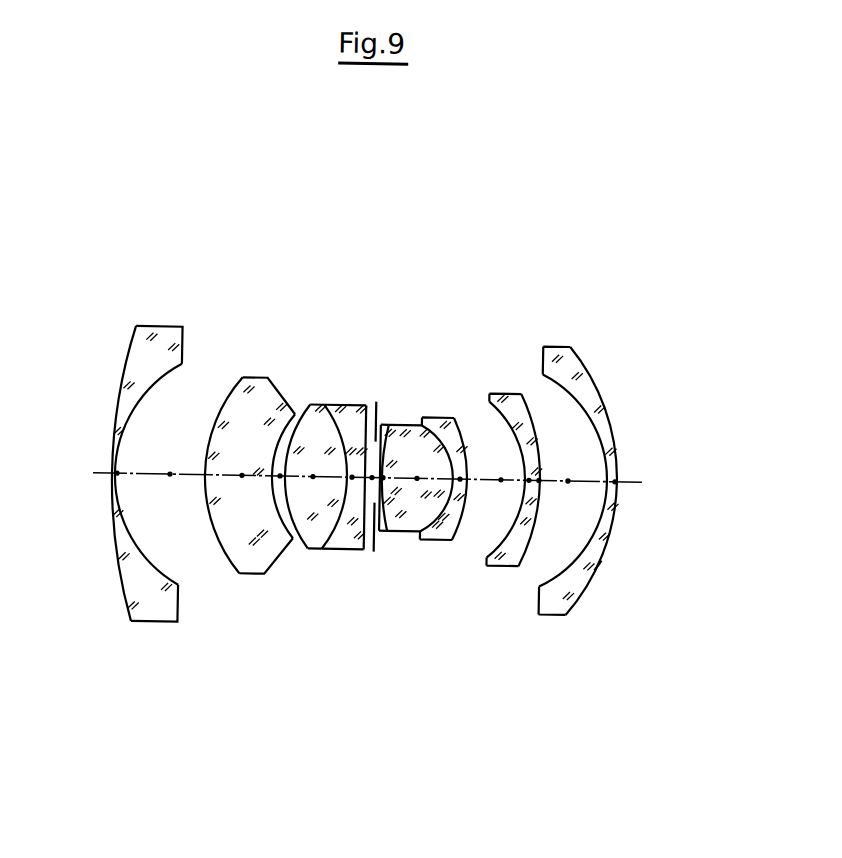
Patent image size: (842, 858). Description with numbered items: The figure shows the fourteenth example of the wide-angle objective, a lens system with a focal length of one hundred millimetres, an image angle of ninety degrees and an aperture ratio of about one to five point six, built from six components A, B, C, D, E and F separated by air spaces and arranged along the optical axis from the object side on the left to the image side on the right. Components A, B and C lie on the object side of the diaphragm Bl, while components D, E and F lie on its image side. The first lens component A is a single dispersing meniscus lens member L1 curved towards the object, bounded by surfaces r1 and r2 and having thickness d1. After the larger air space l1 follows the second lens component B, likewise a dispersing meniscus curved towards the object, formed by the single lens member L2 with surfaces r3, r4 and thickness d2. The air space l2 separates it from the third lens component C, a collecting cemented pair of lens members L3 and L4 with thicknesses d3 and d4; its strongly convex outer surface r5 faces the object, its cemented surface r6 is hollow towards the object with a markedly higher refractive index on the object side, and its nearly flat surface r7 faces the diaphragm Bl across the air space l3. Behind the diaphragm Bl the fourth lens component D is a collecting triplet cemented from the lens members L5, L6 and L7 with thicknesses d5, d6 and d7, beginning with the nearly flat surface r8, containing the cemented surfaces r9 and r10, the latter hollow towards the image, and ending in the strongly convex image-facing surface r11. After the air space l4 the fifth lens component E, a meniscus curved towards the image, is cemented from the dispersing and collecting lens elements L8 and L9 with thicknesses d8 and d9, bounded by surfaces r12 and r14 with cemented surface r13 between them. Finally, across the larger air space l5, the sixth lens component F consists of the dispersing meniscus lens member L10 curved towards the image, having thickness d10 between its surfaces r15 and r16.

The first lens component A is at (82, 143).
The second lens component B is at (171, 142).
The third lens component C is at (317, 140).
The fourth lens component D is at (484, 137).
The fifth lens component E is at (624, 134).
The sixth lens component F is at (709, 132).
The first lens member L1 is at (78, 208).
The second lens member L2 is at (169, 206).
The third lens member L3 is at (255, 204).
The fourth lens member L4 is at (302, 204).
The fifth lens member L5 is at (382, 202).
The sixth lens member L6 is at (431, 201).
The seventh lens member L7 is at (478, 200).
The eighth lens member L8 is at (565, 199).
The ninth lens member L9 is at (612, 198).
The tenth lens member L10 is at (704, 196).
The thickness of lens L1 d1 is at (117, 473).
The thickness of lens L2 d2 is at (242, 473).
The thickness of lens L3 d3 is at (313, 473).
The thickness of lens L4 d4 is at (352, 473).
The thickness of lens L5 d5 is at (383, 473).
The thickness of lens L6 d6 is at (417, 473).
The thickness of lens L7 d7 is at (460, 473).
The thickness of lens L8 d8 is at (529, 473).
The thickness of lens L9 d9 is at (539, 473).
The thickness of lens L10 d10 is at (615, 473).
The first air space l1 is at (170, 473).
The second air space l2 is at (280, 473).
The third air space l3 is at (372, 473).
The fourth air space l4 is at (501, 473).
The fifth air space l5 is at (568, 473).
The first radius of curvature r1 is at (118, 572).
The second radius of curvature r2 is at (153, 566).
The third radius of curvature r3 is at (228, 555).
The fourth radius of curvature r4 is at (272, 502).
The fifth radius of curvature r5 is at (297, 538).
The sixth radius of curvature r6 is at (339, 516).
The seventh radius of curvature r7 is at (362, 527).
The eighth radius of curvature r8 is at (382, 515).
The ninth radius of curvature r9 is at (391, 515).
The tenth radius of curvature r10 is at (433, 519).
The eleventh radius of curvature r11 is at (466, 516).
The twelfth radius of curvature r12 is at (506, 536).
The thirteenth radius of curvature r13 is at (538, 526).
The fourteenth radius of curvature r14 is at (579, 555).
The fifteenth radius of curvature r15 is at (600, 558).
The sixteenth radius of curvature r16 is at (605, 554).
The diaphragm Bl is at (376, 397).